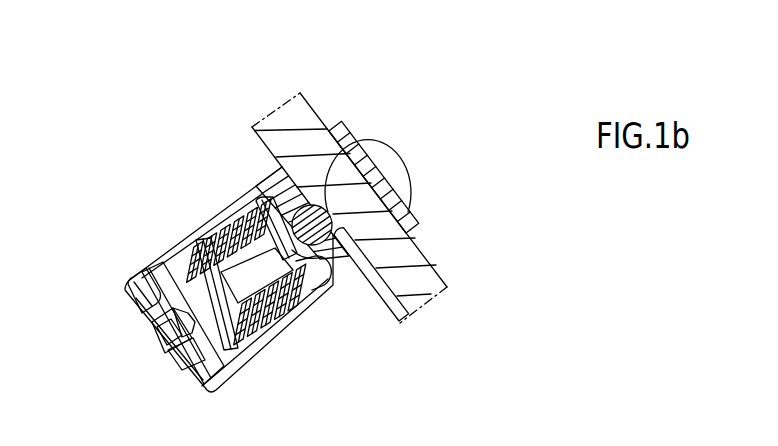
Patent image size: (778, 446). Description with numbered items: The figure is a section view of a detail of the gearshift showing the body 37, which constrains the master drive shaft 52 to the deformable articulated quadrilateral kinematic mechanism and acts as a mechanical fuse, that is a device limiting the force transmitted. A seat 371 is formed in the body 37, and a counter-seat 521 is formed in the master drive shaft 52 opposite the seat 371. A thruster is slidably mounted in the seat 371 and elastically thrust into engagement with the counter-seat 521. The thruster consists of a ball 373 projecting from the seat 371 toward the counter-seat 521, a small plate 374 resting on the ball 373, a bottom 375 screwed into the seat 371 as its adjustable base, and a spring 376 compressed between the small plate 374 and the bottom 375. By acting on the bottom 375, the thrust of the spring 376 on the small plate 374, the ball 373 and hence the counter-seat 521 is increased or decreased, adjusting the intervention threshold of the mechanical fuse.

The body 37 is at (181, 233).
The master drive shaft 52 is at (300, 117).
The counter-seat 521 is at (324, 207).
The seat 371 is at (248, 188).
The ball 373 is at (334, 244).
The small plate 374 is at (334, 242).
The bottom 375 is at (137, 312).
The spring 376 is at (258, 335).